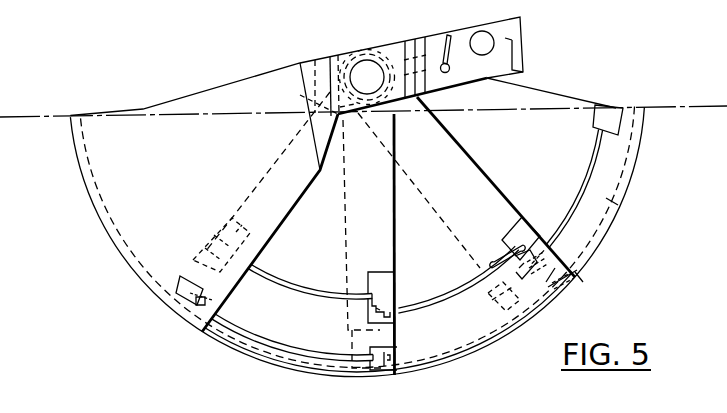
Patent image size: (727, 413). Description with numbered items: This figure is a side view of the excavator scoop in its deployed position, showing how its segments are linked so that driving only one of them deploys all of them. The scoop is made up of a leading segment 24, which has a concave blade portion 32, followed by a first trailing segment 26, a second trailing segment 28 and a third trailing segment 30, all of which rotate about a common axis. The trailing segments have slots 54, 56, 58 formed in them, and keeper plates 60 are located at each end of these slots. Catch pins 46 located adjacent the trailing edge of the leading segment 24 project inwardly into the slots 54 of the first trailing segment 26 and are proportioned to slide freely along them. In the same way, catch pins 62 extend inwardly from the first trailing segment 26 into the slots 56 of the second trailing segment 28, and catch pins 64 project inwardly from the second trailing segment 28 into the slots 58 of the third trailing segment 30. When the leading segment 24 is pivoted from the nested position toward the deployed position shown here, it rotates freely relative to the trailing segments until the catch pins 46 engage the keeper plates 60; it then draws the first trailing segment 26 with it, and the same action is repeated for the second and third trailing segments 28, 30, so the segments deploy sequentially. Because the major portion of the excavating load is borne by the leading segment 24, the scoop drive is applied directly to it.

The leading segment 24 is at (213, 97).
The first trailing segment 26 is at (237, 352).
The second trailing segment 28 is at (487, 350).
The third trailing segment 30 is at (612, 202).
The concave blade portion 32 is at (112, 212).
The catch pins 46 is at (208, 298).
The slots 54 is at (301, 284).
The slots 56 is at (446, 292).
The slots 58 is at (565, 210).
The keeper plates 60 is at (613, 110).
The catch pins 62 is at (383, 305).
The catch pins 64 is at (504, 258).